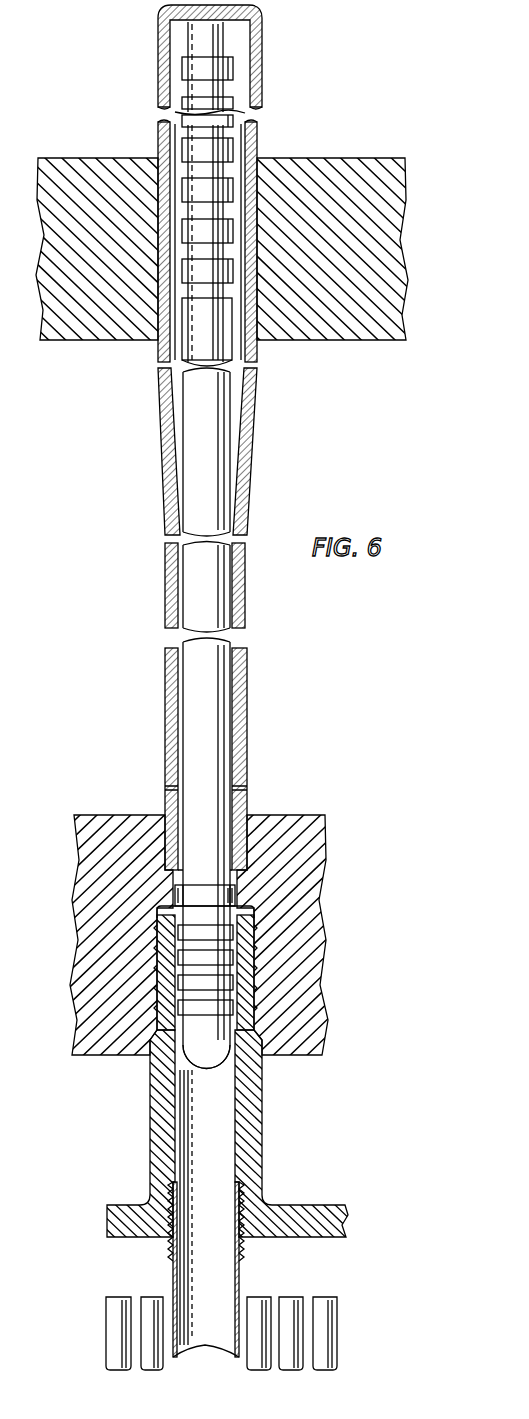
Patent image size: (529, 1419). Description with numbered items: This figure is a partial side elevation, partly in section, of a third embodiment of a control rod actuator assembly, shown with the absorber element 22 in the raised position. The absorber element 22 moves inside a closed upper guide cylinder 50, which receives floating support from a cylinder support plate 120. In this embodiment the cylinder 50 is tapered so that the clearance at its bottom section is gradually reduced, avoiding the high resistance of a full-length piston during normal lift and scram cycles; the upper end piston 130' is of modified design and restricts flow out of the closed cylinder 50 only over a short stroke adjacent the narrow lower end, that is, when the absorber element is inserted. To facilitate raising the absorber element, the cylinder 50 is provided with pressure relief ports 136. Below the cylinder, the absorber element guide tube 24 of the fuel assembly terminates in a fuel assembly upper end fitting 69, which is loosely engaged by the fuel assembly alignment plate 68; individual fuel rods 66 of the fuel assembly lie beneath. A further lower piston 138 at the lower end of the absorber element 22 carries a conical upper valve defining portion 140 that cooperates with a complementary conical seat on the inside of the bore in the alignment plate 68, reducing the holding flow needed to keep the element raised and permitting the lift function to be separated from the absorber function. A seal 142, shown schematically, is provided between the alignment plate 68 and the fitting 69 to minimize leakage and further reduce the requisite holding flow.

The upper guide cylinder 50 is at (263, 59).
The upper end piston 130' is at (255, 483).
The cylinder support plate 120 is at (330, 158).
The absorber element 22 is at (208, 672).
The pressure relief ports 136 is at (165, 790).
The fuel assembly alignment plate 68 is at (300, 815).
The conical upper valve defining portion 140 is at (175, 893).
The seal 142 is at (255, 966).
The fuel assembly upper end fitting 69 is at (262, 1122).
The lower piston 138 is at (152, 1118).
The absorber element guide tube 24 is at (241, 1276).
The fuel rods 66 is at (330, 1322).